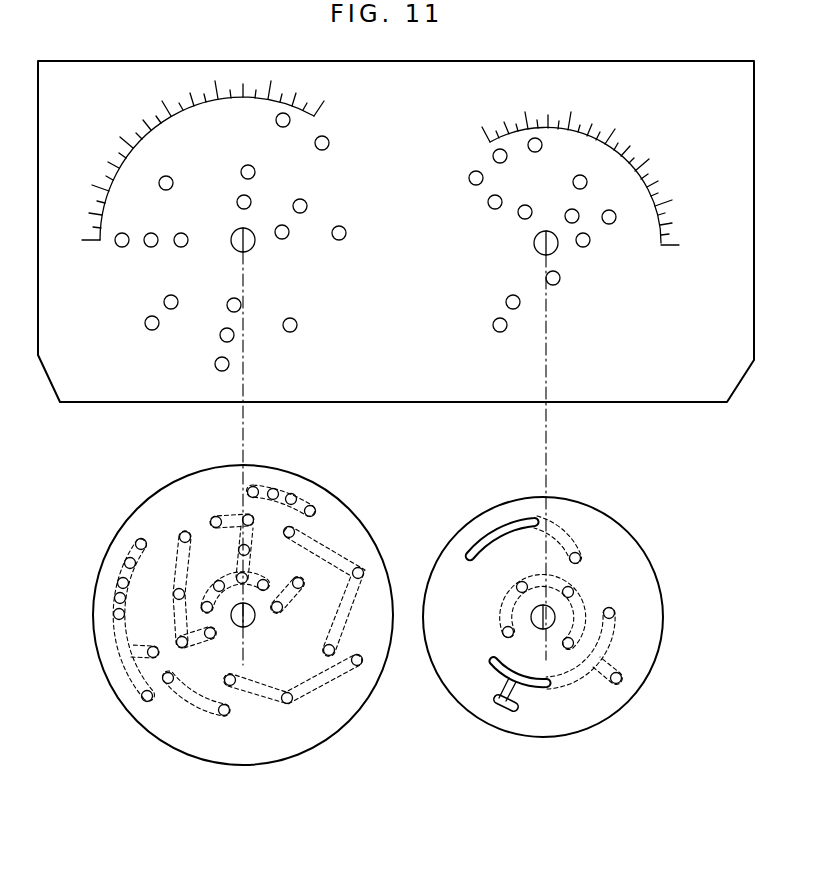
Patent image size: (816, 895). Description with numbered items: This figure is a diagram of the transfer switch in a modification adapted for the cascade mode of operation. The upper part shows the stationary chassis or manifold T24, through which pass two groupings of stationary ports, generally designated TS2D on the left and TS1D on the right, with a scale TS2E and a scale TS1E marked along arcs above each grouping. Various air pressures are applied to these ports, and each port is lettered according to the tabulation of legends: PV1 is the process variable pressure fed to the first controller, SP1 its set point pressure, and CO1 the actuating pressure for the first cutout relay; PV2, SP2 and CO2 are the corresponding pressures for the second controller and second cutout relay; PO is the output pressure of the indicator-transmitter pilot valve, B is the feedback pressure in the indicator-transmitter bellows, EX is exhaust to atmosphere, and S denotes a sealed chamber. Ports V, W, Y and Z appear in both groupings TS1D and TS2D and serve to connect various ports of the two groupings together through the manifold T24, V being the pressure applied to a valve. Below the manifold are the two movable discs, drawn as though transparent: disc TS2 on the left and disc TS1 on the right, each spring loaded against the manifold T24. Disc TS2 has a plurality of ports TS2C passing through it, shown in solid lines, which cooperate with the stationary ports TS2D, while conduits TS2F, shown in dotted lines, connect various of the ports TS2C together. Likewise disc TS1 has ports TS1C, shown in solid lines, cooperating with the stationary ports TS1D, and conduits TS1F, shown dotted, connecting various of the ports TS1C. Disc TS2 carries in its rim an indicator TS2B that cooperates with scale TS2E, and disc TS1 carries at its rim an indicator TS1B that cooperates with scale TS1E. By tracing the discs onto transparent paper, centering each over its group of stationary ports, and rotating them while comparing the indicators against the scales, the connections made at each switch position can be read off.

The stationary manifold T24 is at (117, 71).
The scale TS2E is at (142, 112).
The scale TS1E is at (635, 130).
The stationary ports TS2D is at (296, 353).
The stationary ports TS1D is at (492, 340).
The movable switch disc TS2 is at (167, 503).
The movable disc TS1 is at (614, 530).
The indicator TS2B is at (94, 613).
The indicator TS1B is at (487, 512).
The ports TS2C is at (226, 723).
The ports TS1C is at (500, 720).
The conduits TS2F is at (336, 700).
The conduits TS1F is at (584, 694).
The feedback pressure port B is at (276, 120).
The pilot valve output pressure port PO is at (329, 141).
The sealed chamber legend S is at (244, 166).
The interconnecting port Z is at (238, 198).
The cutout relay actuating pressure port CO1 is at (300, 199).
The cutout relay actuating pressure port CO2 is at (577, 211).
The exhaust port EX is at (285, 239).
The process variable pressure port PV1 is at (181, 247).
The process variable pressure port PV2 is at (166, 176).
The set point pressure port SP1 is at (215, 364).
The set point pressure port SP2 is at (124, 233).
The interconnecting port W is at (232, 298).
The valve pressure port V is at (145, 323).
The interconnecting port Y is at (221, 331).